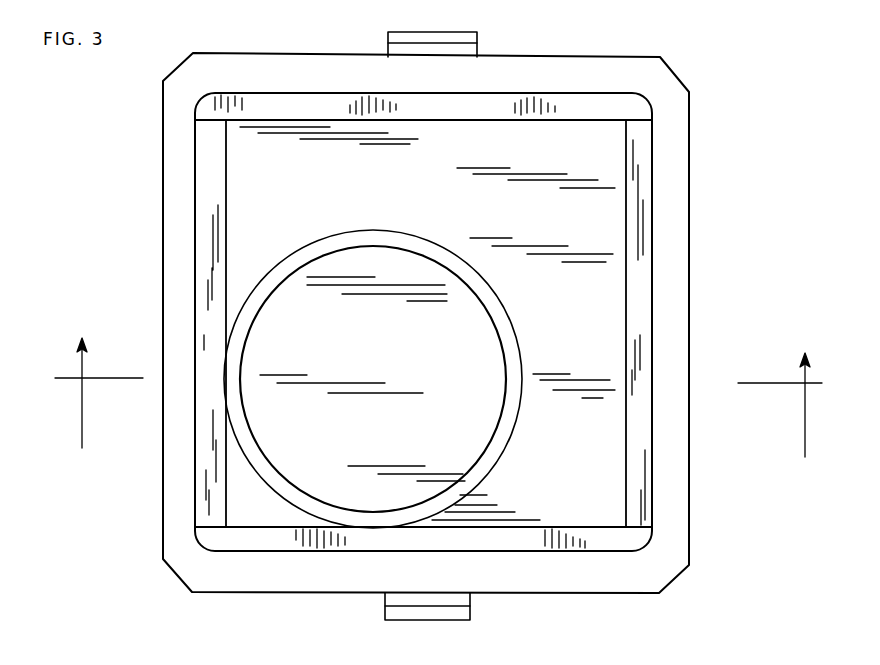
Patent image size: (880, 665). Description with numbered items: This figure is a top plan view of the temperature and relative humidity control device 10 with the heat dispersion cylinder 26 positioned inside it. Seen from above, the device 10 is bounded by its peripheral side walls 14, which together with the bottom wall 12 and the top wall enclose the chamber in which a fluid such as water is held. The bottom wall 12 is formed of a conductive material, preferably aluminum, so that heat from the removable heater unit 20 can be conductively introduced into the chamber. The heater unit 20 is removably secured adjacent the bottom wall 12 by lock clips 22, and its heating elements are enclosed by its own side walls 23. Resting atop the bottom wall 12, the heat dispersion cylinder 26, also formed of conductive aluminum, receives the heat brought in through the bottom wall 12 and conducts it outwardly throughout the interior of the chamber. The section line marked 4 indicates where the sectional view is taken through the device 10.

The device 10 is at (438, 324).
The bottom wall 12 is at (390, 181).
The peripheral side walls 14 is at (370, 100).
The heater unit 20 is at (586, 62).
The lock clips 22 is at (427, 33).
The side walls 23 is at (317, 58).
The heat dispersion cylinder 26 is at (515, 352).
The section line 4- 4 is at (438, 412).